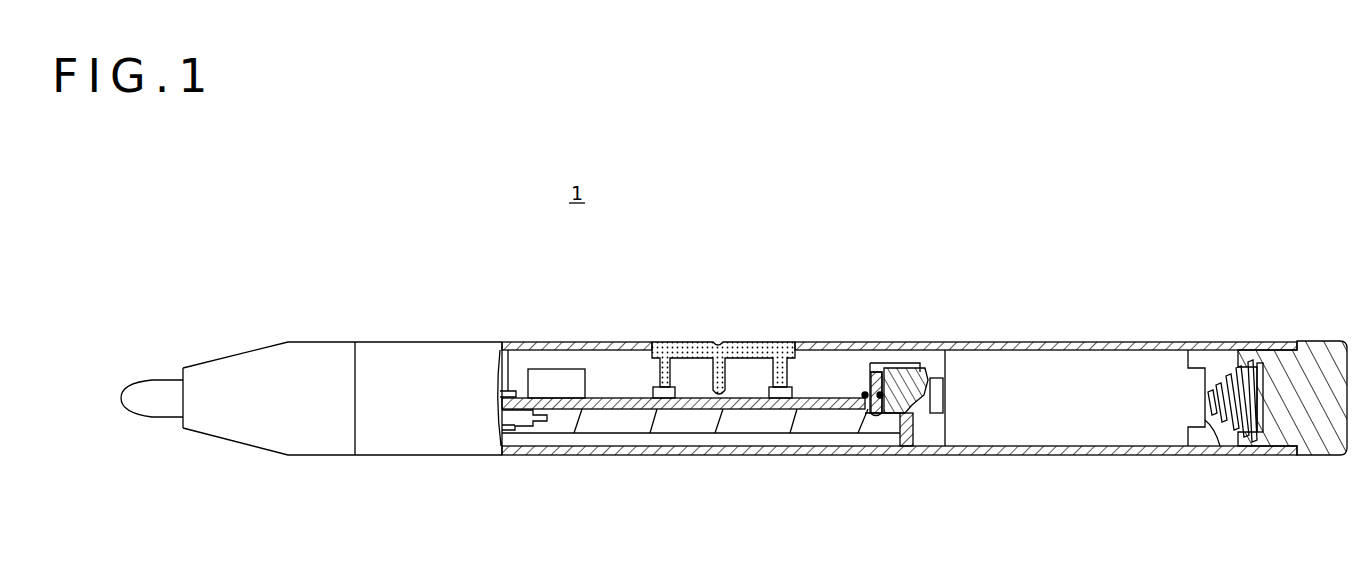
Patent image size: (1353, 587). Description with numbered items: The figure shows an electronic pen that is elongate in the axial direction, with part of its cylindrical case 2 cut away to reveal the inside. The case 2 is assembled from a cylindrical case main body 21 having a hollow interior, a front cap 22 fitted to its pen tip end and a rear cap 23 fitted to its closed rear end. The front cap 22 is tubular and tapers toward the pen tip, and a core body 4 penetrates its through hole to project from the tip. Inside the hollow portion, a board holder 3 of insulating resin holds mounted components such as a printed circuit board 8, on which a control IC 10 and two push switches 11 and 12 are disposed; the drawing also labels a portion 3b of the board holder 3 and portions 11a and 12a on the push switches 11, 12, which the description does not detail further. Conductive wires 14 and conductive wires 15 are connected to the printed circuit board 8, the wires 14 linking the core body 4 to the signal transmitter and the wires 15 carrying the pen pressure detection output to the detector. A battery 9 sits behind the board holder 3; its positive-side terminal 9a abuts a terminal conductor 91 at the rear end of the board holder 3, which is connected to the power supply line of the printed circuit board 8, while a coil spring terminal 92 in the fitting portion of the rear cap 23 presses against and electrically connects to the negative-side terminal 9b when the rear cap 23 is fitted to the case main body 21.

The case 2 is at (977, 459).
The board holder 3 is at (782, 421).
The board holder 3b is at (739, 423).
The core body 4 is at (132, 399).
The printed circuit board 8 is at (828, 397).
The battery 9 is at (1100, 434).
The positive-side terminal 9a is at (937, 414).
The negative-side terminal 9b is at (1219, 447).
The control integrated circuit 10 is at (560, 380).
The push switch 11 is at (662, 399).
The first switch operating portion 11a is at (680, 345).
The push switch 12 is at (792, 396).
The second switch operating portion 12a is at (763, 341).
The conductive wires 14 is at (525, 412).
The conductive wires 15 is at (508, 389).
The case main body 21 is at (1018, 342).
The front cap 22 is at (259, 362).
The rear cap 23 is at (1313, 433).
The terminal conductor 91 is at (896, 366).
The coil spring terminal 92 is at (1217, 385).